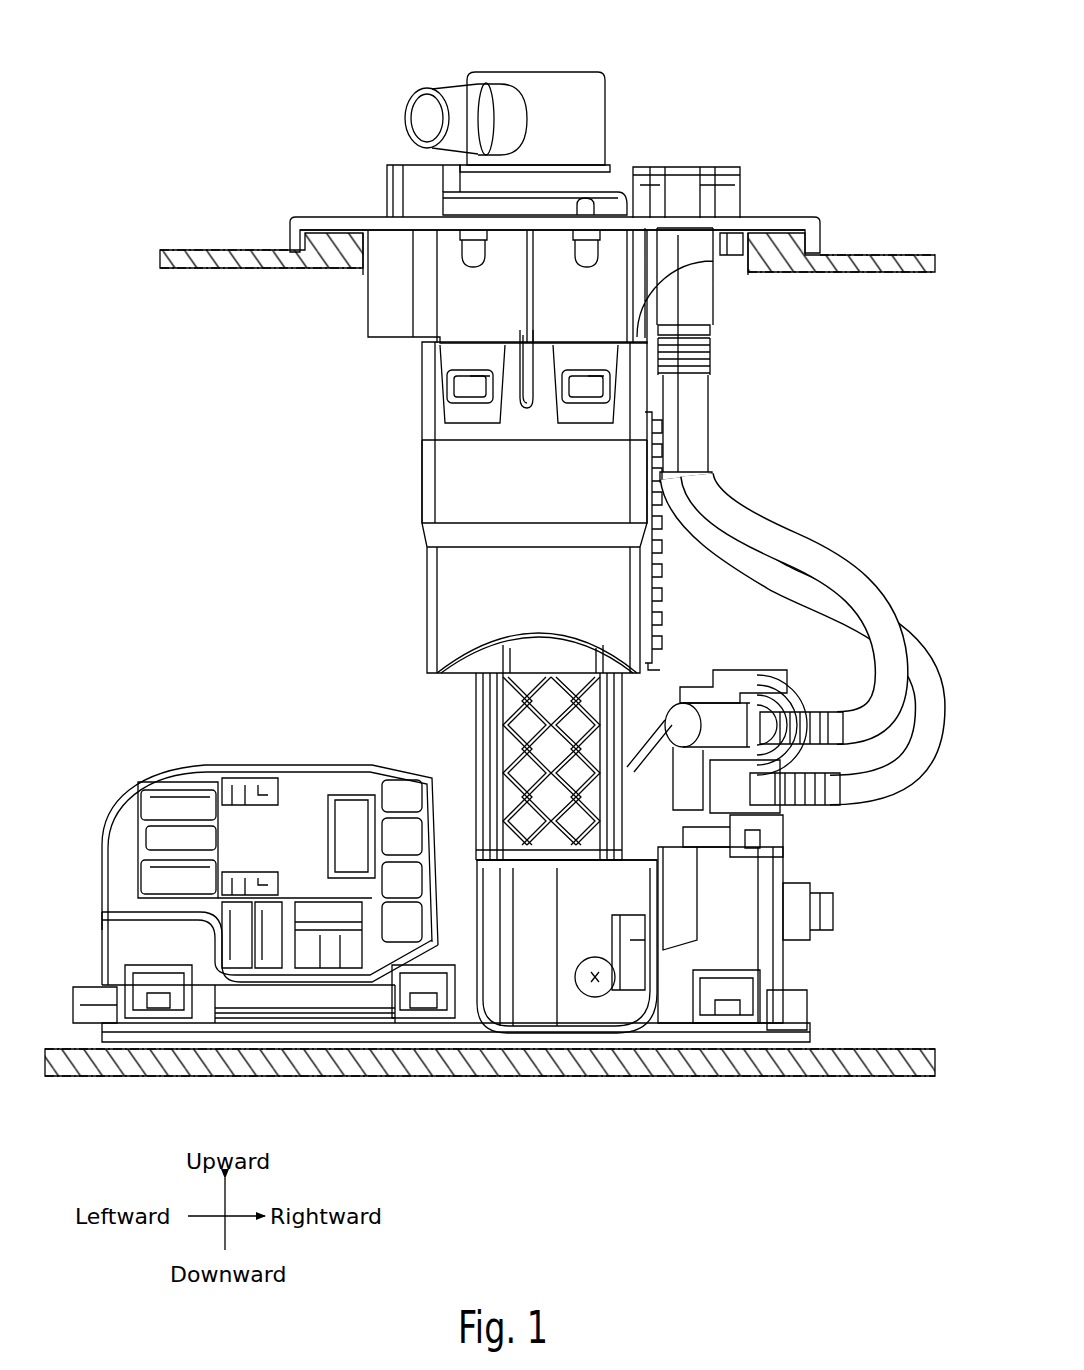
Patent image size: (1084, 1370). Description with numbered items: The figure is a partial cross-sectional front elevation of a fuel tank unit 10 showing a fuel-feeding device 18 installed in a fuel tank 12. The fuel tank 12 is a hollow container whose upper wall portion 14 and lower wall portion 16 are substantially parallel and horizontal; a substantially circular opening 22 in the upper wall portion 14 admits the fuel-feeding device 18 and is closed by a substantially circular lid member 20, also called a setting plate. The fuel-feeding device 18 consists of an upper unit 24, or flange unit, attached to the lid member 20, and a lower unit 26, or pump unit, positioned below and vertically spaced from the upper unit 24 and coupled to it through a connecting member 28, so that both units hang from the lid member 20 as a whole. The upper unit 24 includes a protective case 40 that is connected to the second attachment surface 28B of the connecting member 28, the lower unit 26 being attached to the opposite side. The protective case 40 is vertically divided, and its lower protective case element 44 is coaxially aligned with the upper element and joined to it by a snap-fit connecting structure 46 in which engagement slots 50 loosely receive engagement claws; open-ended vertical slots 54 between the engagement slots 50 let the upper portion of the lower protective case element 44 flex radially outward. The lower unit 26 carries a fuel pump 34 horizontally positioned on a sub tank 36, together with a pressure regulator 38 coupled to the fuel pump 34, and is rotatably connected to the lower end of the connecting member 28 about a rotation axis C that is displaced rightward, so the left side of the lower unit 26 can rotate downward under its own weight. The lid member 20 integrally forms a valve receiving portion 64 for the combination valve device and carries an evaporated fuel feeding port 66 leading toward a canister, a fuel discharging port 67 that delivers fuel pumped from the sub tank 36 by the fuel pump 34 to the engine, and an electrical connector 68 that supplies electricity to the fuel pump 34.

The fuel tank unit 10 is at (742, 80).
The fuel tank 12 is at (494, 664).
The upper wall portion 14 is at (872, 258).
The lower wall portion 16 is at (705, 1077).
The fuel-feeding device 18 is at (350, 600).
The lid member 20 is at (335, 218).
The opening 22 is at (365, 262).
The upper unit 24 is at (385, 425).
The lower unit 26 is at (240, 750).
The connecting member 28 is at (490, 700).
The second attachment surface 28B is at (530, 735).
The fuel pump 34 is at (305, 825).
The sub tank 36 is at (297, 993).
The pressure regulator 38 is at (768, 672).
The protective case 40 is at (473, 481).
The lower protective case element 44 is at (445, 485).
The snap-fit connecting structure 46 is at (470, 397).
The engagement slot 50 is at (472, 385).
The vertical slot 54 is at (533, 362).
The valve receiving portion 64 is at (588, 205).
The evaporated fuel feeding port 66 is at (466, 105).
The fuel discharging port 67 is at (703, 315).
The electrical connector 68 is at (410, 195).
The rotation axis C is at (597, 998).